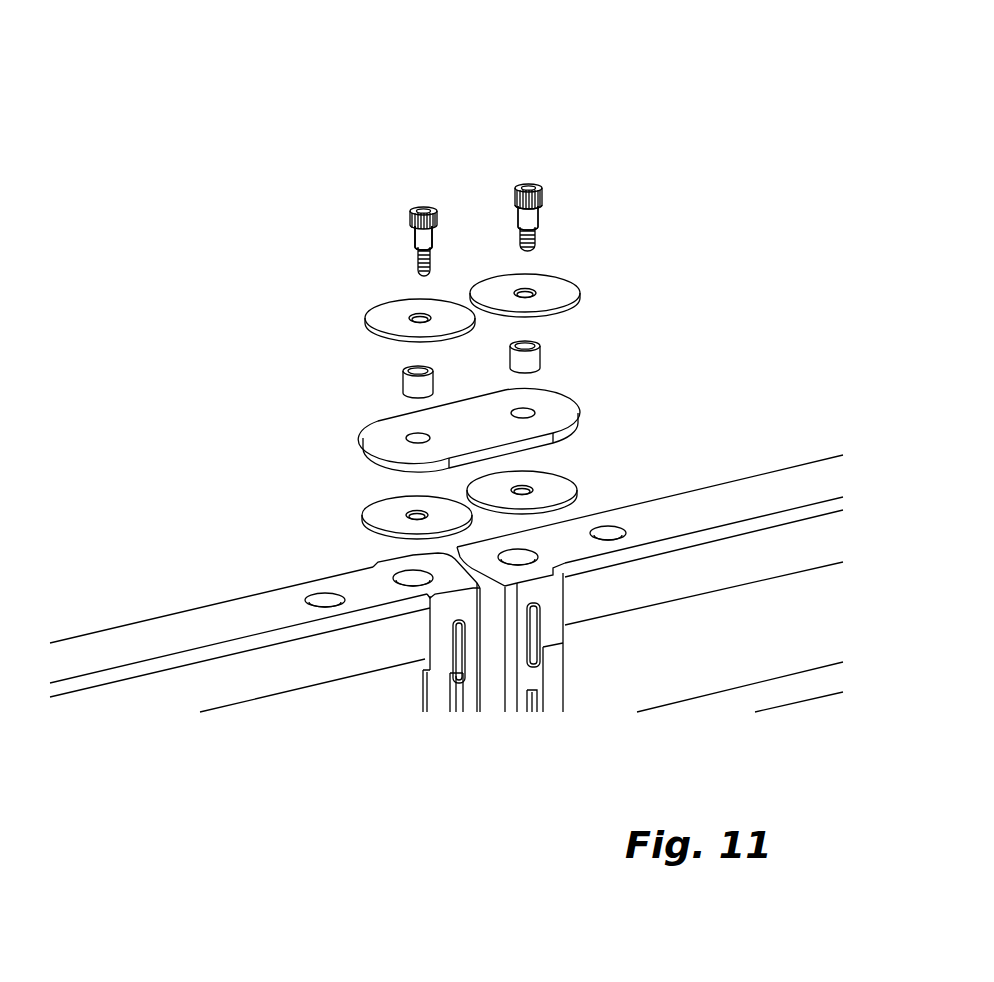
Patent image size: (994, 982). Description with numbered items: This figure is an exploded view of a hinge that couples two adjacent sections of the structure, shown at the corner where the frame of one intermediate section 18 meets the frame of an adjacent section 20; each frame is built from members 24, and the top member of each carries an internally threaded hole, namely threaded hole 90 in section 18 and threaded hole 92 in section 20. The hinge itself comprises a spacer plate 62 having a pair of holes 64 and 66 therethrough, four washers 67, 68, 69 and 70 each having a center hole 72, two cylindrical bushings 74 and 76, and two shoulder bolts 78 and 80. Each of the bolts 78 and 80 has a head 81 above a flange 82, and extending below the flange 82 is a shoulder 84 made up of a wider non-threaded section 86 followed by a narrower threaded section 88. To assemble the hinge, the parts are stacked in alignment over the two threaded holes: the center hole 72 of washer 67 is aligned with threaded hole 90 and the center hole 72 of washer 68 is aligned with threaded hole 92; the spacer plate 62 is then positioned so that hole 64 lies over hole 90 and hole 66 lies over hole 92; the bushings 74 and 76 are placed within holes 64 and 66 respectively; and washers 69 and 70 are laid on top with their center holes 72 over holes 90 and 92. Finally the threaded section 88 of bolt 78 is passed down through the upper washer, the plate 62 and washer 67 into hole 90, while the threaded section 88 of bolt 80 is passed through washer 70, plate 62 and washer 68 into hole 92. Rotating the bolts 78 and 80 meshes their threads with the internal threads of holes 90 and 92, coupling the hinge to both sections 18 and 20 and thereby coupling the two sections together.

The intermediate section 18 is at (300, 717).
The adjacent section 20 is at (773, 663).
The rail member 24 is at (162, 647).
The spacer plate 62 is at (577, 410).
The hole 64 is at (417, 438).
The hole 66 is at (525, 412).
The washer 67 is at (363, 518).
The washer 68 is at (577, 490).
The washer 69 is at (373, 313).
The washer 70 is at (565, 285).
The center hole 72 is at (420, 318).
The cylindrical bushing 74 is at (404, 383).
The cylindrical bushing 76 is at (536, 356).
The shoulder bolt 78 is at (377, 185).
The shoulder bolt 80 is at (505, 153).
The head 81 is at (416, 206).
The flange 82 is at (437, 233).
The shoulder 84 is at (547, 205).
The non-threaded section 86 is at (412, 235).
The threaded section 88 is at (410, 265).
The threaded hole 90 is at (412, 587).
The threaded hole 92 is at (560, 590).